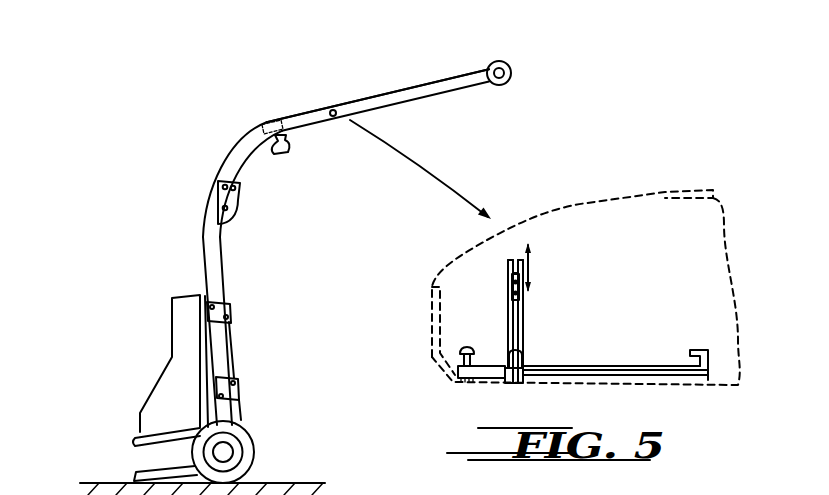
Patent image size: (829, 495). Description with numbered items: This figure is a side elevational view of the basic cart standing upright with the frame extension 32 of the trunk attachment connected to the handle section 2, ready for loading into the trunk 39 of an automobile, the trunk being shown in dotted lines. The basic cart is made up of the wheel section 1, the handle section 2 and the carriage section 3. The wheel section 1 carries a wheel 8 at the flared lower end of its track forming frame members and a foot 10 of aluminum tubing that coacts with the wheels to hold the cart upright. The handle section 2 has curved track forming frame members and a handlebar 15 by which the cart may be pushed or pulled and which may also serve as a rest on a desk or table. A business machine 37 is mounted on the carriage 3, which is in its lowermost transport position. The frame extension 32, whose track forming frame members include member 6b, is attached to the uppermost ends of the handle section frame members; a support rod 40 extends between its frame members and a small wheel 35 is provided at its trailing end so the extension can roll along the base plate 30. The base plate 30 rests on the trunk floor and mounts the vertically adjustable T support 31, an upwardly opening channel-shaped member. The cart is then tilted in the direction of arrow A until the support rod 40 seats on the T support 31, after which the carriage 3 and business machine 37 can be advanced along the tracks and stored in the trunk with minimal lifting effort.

The wheel section 1 is at (240, 350).
The handle section 2 is at (256, 203).
The carriage section 3 is at (144, 370).
The track forming frame member 6b is at (405, 102).
The wheel 8 is at (243, 473).
The foot 10 is at (150, 472).
The handlebar 15 is at (287, 153).
The base plate 30 is at (607, 385).
The T support 31 is at (507, 267).
The frame extension 32 is at (446, 50).
The small wheel 35 is at (508, 82).
The business machine 37 is at (178, 327).
The trunk 39 is at (680, 193).
The support rod 40 is at (333, 112).
The arrow A is at (420, 169).